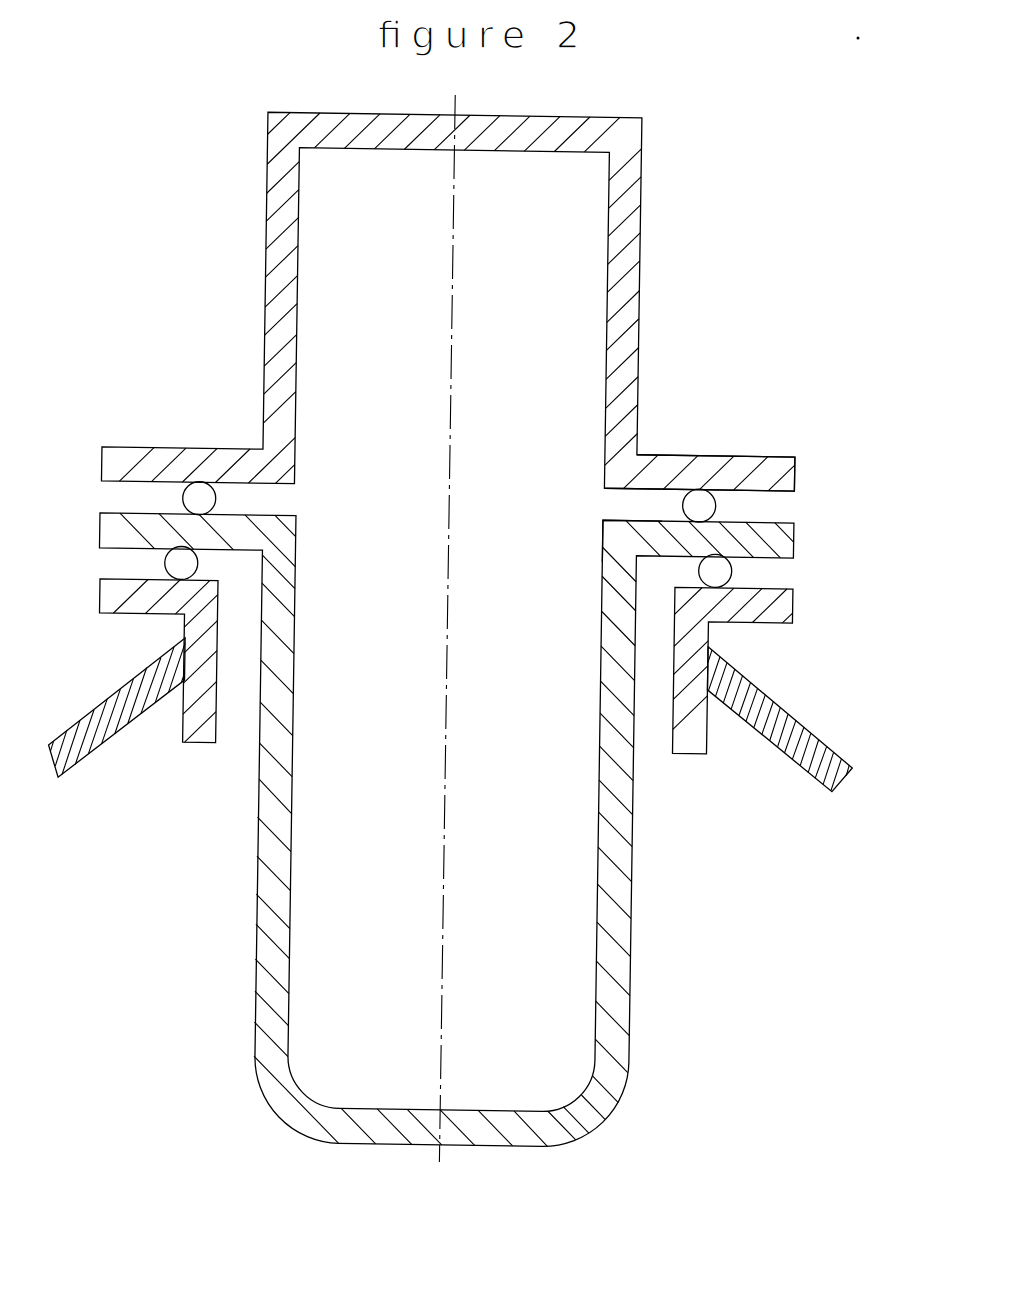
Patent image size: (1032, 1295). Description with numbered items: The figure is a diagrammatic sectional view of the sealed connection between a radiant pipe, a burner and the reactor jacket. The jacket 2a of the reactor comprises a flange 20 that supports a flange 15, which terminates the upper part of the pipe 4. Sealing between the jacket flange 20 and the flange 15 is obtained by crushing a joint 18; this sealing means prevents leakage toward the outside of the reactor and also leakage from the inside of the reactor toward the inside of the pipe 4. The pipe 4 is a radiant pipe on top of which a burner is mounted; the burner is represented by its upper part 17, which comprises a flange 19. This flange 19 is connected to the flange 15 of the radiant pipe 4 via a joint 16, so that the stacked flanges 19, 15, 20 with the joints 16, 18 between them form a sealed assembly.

The upper part of burner 17 is at (640, 288).
The flange of burner 19 is at (743, 475).
The flange of radiant pipe 15 is at (602, 518).
The joint 16 is at (722, 507).
The joint 18 is at (732, 573).
The flange of jacket 20 is at (770, 615).
The jacket 2a is at (782, 703).
The pipe 4 is at (625, 880).